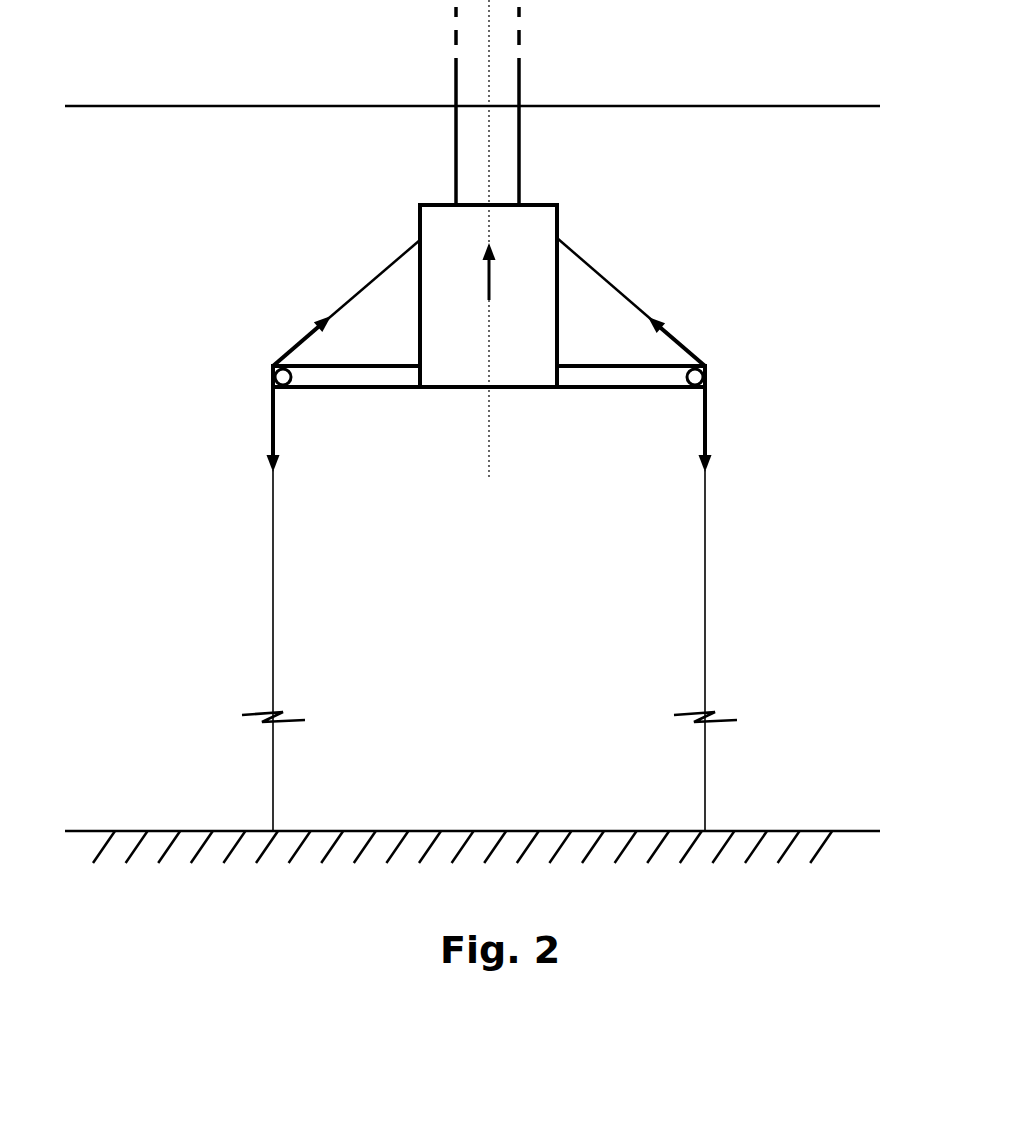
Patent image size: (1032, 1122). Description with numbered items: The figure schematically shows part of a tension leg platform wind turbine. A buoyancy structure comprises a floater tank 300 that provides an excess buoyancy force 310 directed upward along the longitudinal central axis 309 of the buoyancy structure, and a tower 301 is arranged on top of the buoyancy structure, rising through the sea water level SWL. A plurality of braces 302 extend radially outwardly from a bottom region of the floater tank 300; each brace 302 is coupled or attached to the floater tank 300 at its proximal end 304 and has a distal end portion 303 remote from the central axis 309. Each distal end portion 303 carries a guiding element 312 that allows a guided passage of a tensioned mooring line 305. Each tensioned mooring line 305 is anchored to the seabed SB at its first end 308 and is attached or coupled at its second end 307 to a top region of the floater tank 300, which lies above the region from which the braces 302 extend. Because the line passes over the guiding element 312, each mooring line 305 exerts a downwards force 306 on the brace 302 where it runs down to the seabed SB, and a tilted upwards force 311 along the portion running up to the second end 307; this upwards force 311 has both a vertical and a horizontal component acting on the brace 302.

The floater tank 300 is at (542, 230).
The tower 301 is at (508, 82).
The brace 302 is at (618, 378).
The distal end portion 303 is at (272, 370).
The proximal end 304 is at (418, 390).
The tensioned mooring line 305 is at (362, 287).
The downwards force 306 is at (708, 415).
The second end 307 is at (420, 240).
The first end 308 is at (272, 830).
The longitudinal central axis 309 is at (491, 462).
The excess buoyancy force 310 is at (497, 288).
The upwards force 311 is at (673, 332).
The guiding element 312 is at (285, 382).
The sea water level SWL is at (822, 105).
The seabed SB is at (823, 830).